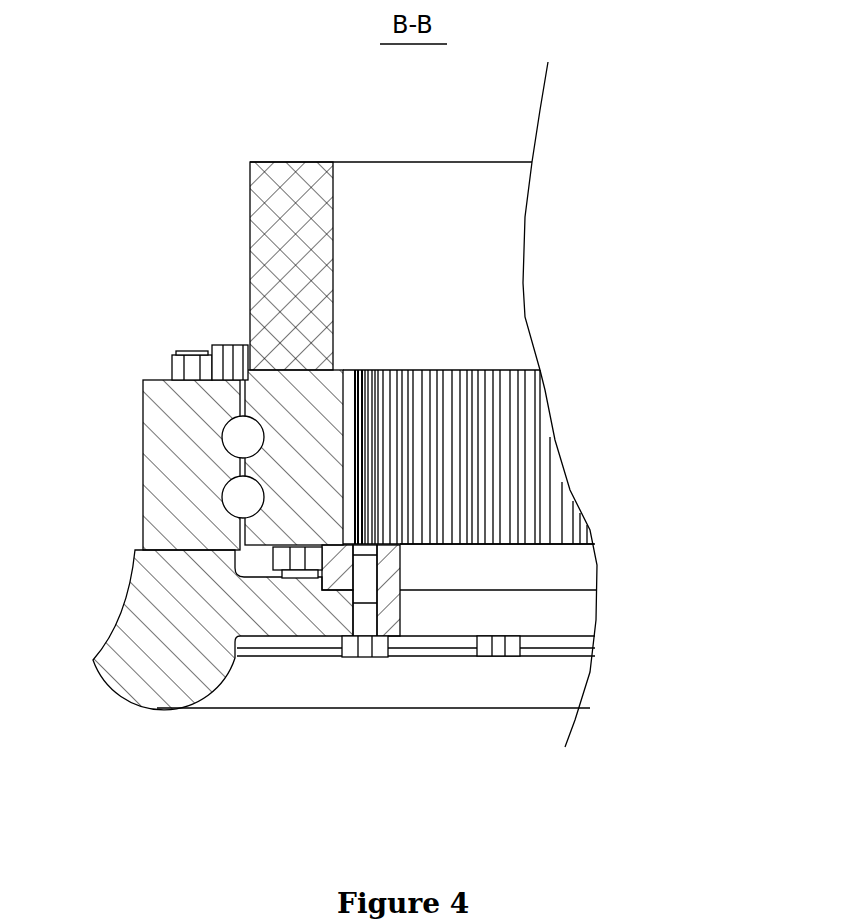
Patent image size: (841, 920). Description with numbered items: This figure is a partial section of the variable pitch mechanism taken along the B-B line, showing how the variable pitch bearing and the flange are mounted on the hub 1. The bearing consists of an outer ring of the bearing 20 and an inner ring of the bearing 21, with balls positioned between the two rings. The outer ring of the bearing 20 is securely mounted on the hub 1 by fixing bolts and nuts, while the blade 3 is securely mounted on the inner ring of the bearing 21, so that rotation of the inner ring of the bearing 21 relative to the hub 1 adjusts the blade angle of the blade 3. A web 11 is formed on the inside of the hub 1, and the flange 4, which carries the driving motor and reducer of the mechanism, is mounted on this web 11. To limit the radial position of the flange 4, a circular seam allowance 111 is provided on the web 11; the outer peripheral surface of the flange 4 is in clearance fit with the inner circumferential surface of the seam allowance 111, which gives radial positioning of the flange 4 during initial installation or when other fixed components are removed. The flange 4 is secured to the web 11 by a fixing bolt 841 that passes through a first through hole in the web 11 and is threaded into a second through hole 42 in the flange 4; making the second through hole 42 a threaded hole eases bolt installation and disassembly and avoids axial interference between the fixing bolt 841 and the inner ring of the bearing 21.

The hub 1 is at (177, 612).
The blade 3 is at (278, 245).
The flange 4 is at (382, 565).
The web 11 is at (388, 620).
The outer ring of the bearing 20 is at (180, 428).
The inner ring of the bearing 21 is at (297, 410).
The second through hole 42 is at (467, 542).
The seam allowance 111 is at (330, 583).
The fixing bolt 841 is at (362, 655).